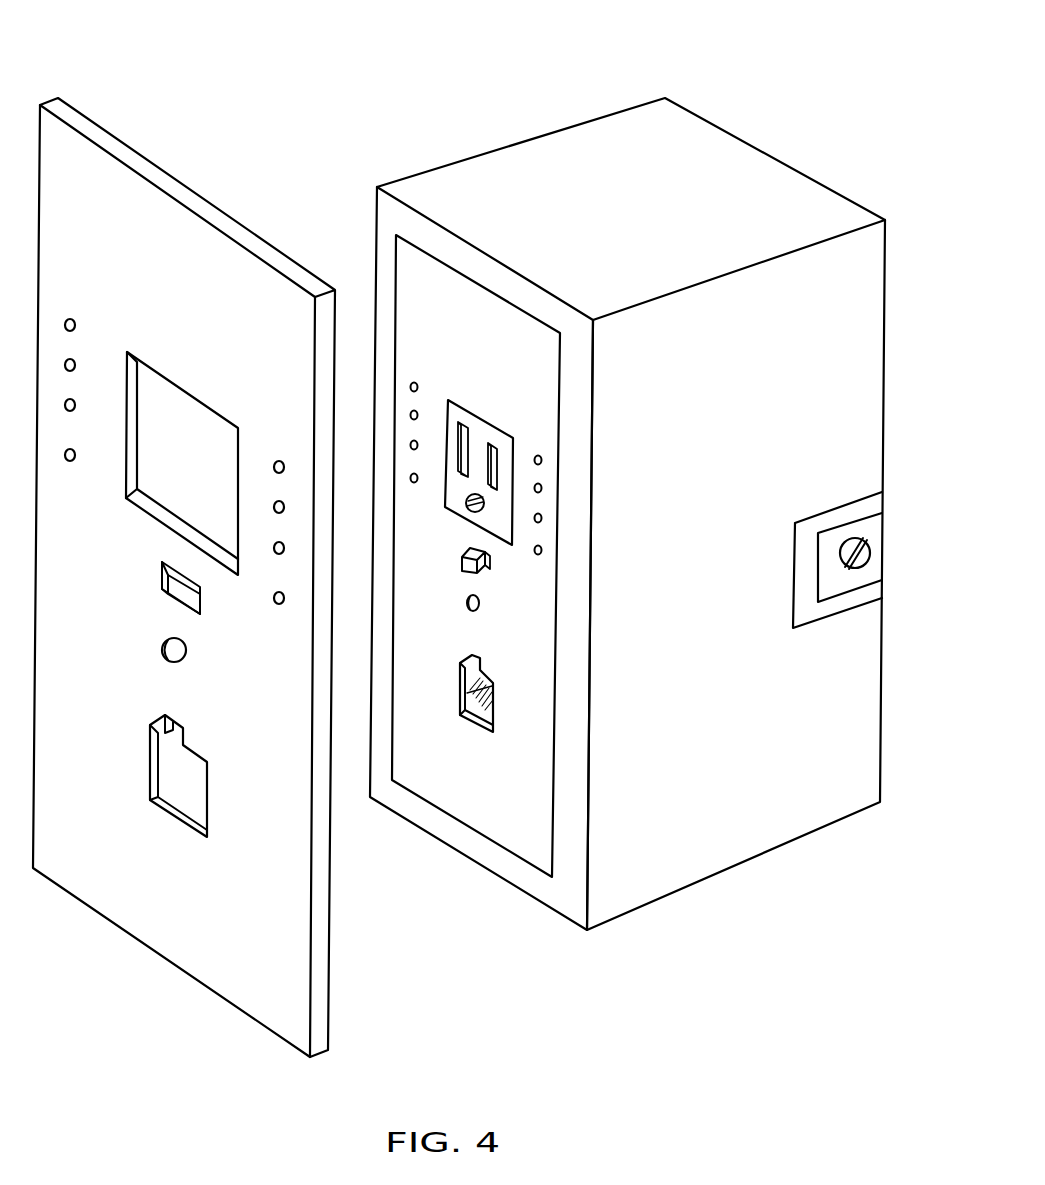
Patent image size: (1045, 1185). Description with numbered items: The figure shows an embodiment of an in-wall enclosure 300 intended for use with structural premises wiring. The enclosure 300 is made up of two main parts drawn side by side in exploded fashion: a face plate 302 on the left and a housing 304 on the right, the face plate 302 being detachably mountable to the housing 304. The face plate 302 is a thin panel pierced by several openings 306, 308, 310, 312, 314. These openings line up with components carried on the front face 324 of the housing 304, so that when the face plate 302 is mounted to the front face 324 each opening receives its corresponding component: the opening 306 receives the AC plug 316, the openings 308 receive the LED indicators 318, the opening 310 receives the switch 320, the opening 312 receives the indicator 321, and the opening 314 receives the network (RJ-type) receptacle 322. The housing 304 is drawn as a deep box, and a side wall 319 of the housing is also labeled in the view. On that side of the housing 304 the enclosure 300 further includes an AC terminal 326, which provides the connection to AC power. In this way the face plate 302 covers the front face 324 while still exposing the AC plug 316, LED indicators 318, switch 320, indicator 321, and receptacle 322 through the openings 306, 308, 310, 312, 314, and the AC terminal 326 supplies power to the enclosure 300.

The in-wall enclosure 300 is at (472, 78).
The face plate 302 is at (172, 178).
The housing 304 is at (700, 116).
The opening 306 is at (160, 373).
The openings 308 is at (72, 320).
The opening 310 is at (202, 603).
The opening 312 is at (186, 650).
The opening 314 is at (186, 735).
The AC plug 316 is at (467, 408).
The LED indicators 318 is at (415, 383).
The side wall 319 is at (582, 418).
The switch 320 is at (490, 570).
The indicator 321 is at (480, 612).
The RJ-45 receptacle 322 is at (483, 720).
The front face 324 is at (443, 602).
The AC terminal 326 is at (870, 549).